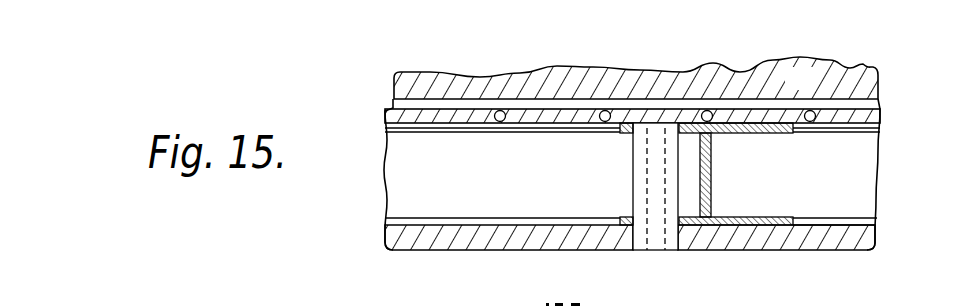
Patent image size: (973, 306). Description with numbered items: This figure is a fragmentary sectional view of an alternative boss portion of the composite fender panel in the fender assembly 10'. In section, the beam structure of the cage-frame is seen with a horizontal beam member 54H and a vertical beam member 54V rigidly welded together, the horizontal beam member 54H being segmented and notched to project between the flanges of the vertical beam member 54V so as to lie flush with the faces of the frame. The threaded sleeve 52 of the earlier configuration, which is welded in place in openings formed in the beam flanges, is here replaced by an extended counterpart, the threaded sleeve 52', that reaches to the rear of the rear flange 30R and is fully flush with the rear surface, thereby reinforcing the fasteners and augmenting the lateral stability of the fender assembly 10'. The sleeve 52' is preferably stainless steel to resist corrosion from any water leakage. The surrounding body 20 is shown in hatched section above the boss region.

The fender assembly 10' is at (326, 174).
The housing body 20 is at (814, 88).
The rear flange 30R is at (627, 133).
The threaded sleeve 52 is at (835, 211).
The threaded sleeve 52' is at (615, 186).
The horizontal beam member 54H is at (491, 185).
The vertical beam member 54V is at (758, 214).